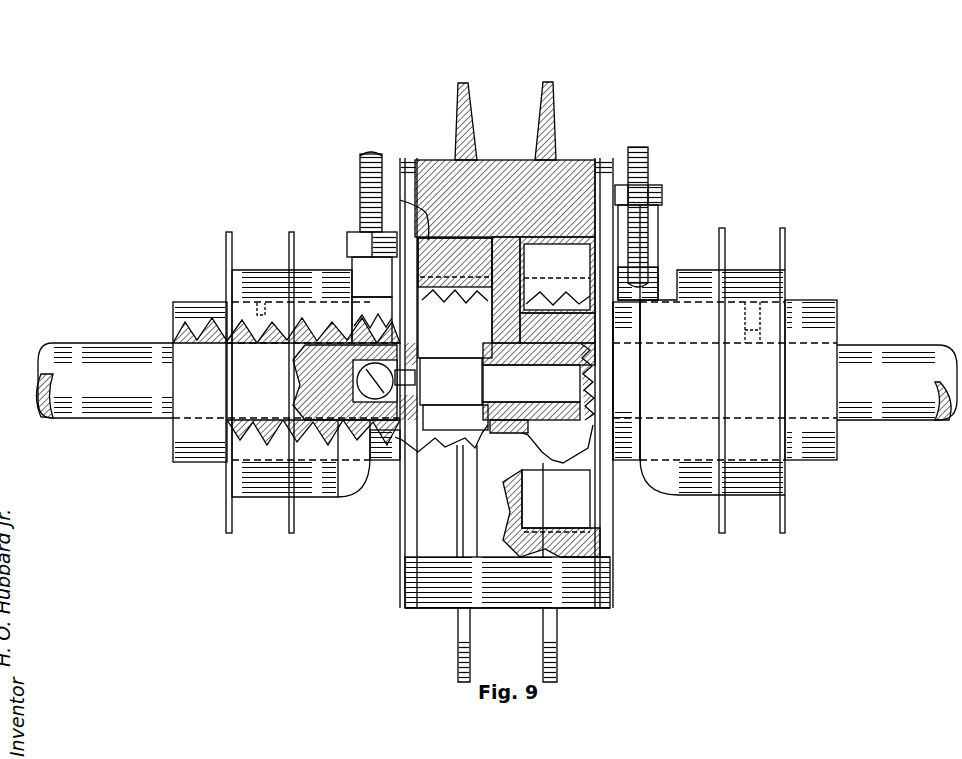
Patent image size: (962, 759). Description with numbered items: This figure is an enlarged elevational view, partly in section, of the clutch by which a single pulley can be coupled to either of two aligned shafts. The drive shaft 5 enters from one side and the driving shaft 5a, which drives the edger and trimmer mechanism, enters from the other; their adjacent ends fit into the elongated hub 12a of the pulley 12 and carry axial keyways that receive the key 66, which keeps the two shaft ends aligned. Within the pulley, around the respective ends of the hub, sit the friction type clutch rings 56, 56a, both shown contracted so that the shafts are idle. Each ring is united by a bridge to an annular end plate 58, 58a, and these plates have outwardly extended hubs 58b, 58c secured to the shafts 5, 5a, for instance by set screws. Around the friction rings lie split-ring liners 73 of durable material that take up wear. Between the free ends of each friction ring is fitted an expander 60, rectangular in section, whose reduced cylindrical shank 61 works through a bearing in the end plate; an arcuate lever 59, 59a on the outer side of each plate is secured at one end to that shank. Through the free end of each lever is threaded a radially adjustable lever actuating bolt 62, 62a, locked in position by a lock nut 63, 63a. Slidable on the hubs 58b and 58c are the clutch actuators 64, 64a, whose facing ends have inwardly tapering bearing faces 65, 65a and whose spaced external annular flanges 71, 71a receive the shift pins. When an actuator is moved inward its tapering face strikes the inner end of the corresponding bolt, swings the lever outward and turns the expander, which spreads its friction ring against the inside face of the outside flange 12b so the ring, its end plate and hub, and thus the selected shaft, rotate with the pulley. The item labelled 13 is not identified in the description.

The drive shaft 5 is at (148, 343).
The driving shaft 5a is at (906, 345).
The pulley 12 is at (534, 82).
The elongated hub 12a is at (593, 313).
The outside flange 12b is at (565, 158).
The belt groove 13 is at (402, 200).
The friction type clutch ring 56 is at (425, 267).
The friction type clutch ring 56a is at (580, 247).
The annular end plate 58 is at (408, 158).
The annular end plate 58a is at (605, 158).
The outwardly extended hub 58b is at (175, 460).
The outwardly extended hub 58c is at (800, 462).
The arcuate lever 59 is at (372, 318).
The arcuate lever 59a is at (653, 237).
The expander 60 is at (462, 366).
The reduced cylindrical shank 61 is at (396, 464).
The lever actuating bolt 62 is at (370, 154).
The lever actuating bolt 62a is at (648, 151).
The lock nut 63 is at (358, 232).
The lock nut 63a is at (655, 186).
The clutch actuator 64 is at (305, 499).
The clutch actuator 64a is at (700, 498).
The inwardly tapering bearing face 65 is at (360, 497).
The inwardly tapering bearing face 65a is at (648, 480).
The key 66 is at (577, 390).
The external annular flange 71 is at (226, 524).
The external annular flange 71a is at (731, 528).
The liner 73 is at (605, 554).